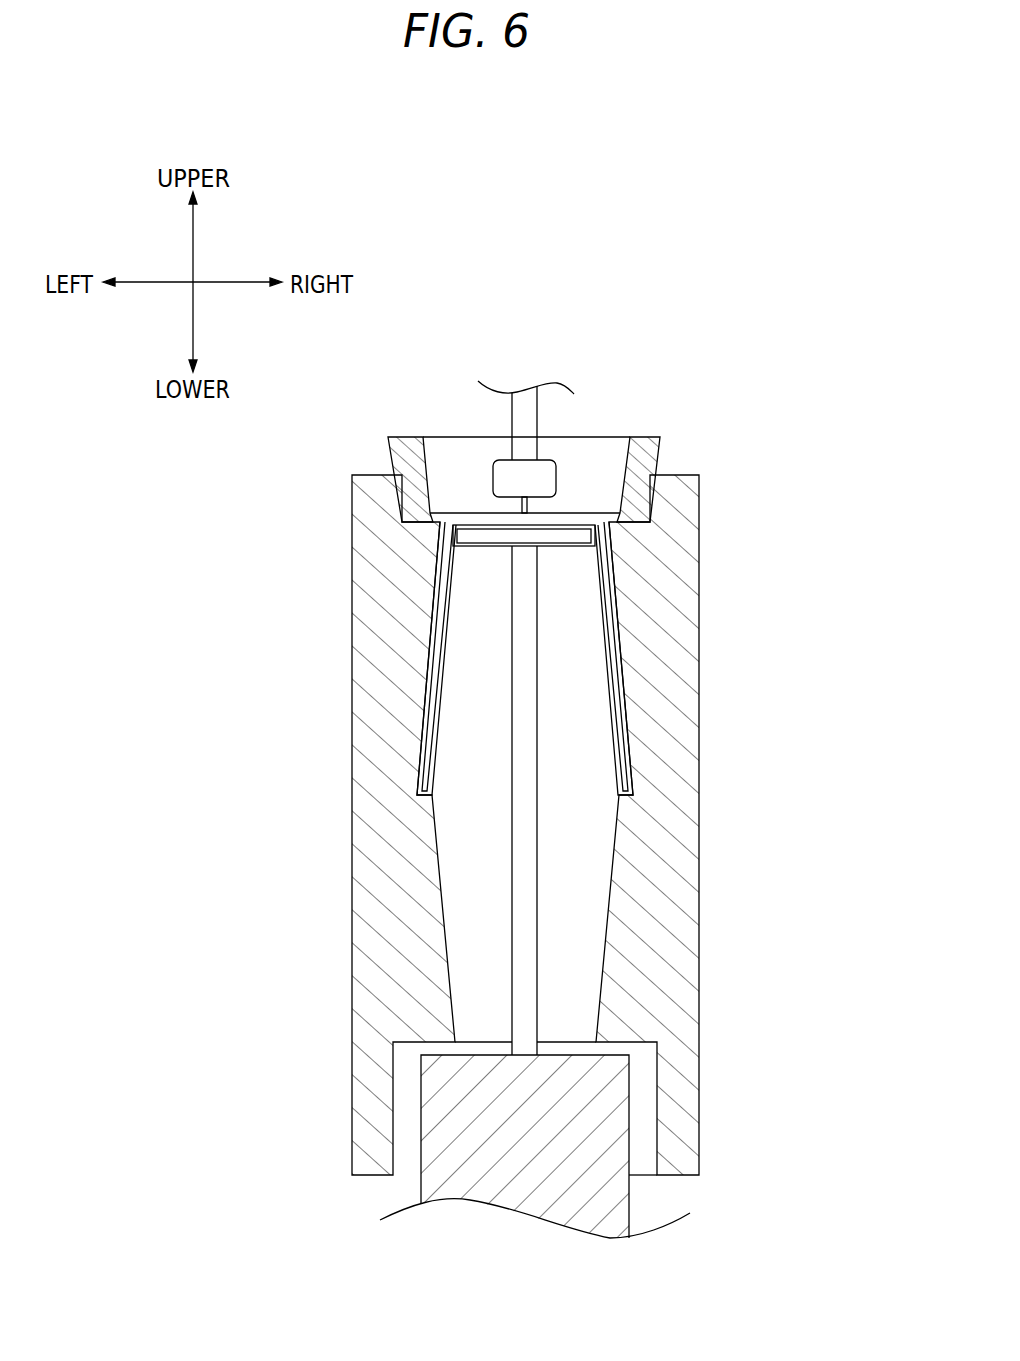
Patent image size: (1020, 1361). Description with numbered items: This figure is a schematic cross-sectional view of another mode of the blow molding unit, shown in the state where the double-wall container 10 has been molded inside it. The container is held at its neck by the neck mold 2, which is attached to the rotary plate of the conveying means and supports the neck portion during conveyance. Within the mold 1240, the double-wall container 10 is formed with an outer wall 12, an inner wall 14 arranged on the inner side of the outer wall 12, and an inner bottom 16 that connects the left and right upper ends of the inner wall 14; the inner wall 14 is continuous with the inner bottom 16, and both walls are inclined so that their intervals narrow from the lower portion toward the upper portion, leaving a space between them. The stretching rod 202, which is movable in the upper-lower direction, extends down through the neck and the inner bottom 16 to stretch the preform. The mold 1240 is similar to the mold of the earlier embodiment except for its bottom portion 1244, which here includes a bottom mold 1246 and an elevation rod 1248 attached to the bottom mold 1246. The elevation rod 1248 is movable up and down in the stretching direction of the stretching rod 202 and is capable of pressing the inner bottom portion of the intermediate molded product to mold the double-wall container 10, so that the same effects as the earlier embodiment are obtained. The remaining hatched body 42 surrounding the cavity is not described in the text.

The neck mold 2 is at (652, 452).
The double-wall container 10 is at (529, 590).
The outer wall 12 is at (440, 597).
The inner wall 14 is at (438, 652).
The inner bottom 16 is at (488, 528).
The block 42 is at (692, 790).
The stretching rod 202 is at (536, 427).
The mold 1240 is at (610, 819).
The bottom portion 1244 is at (628, 892).
The bottom mold 1246 is at (597, 1102).
The elevation rod 1248 is at (535, 903).